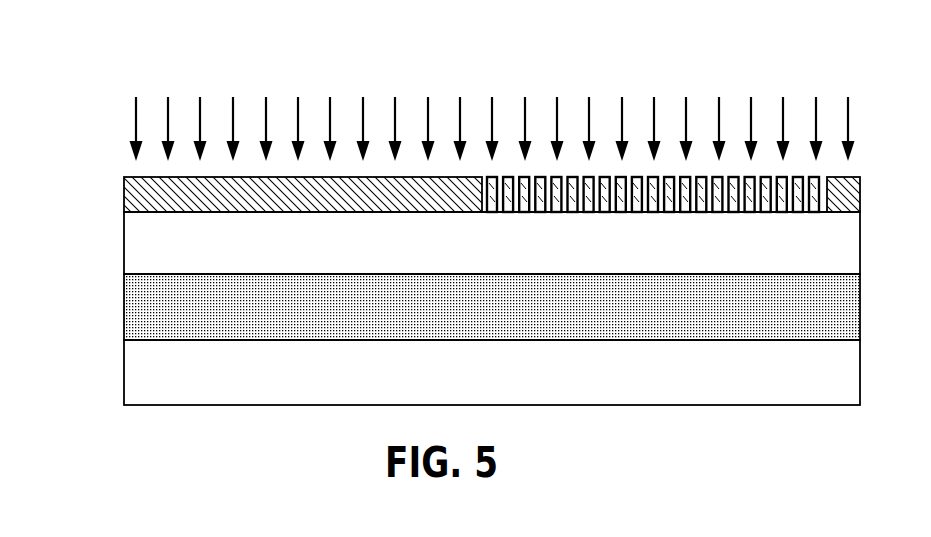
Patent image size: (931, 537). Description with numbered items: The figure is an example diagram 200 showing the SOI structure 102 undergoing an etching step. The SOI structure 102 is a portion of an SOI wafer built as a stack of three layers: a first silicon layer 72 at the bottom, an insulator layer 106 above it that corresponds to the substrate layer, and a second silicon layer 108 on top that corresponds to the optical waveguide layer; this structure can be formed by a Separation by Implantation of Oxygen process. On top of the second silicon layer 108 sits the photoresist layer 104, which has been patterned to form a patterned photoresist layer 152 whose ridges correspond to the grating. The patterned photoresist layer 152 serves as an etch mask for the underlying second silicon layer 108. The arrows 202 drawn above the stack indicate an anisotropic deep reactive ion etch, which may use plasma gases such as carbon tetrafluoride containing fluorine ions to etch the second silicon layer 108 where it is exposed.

The diagram 200 is at (136, 37).
The arrows 202 is at (666, 69).
The SOI structure 102 is at (116, 272).
The second silicon layer 108 is at (492, 243).
The insulator layer 106 is at (492, 307).
The first silicon layer 72 is at (492, 372).
The photoresist layer 104 is at (424, 207).
The patterned photoresist layer 152 is at (676, 225).